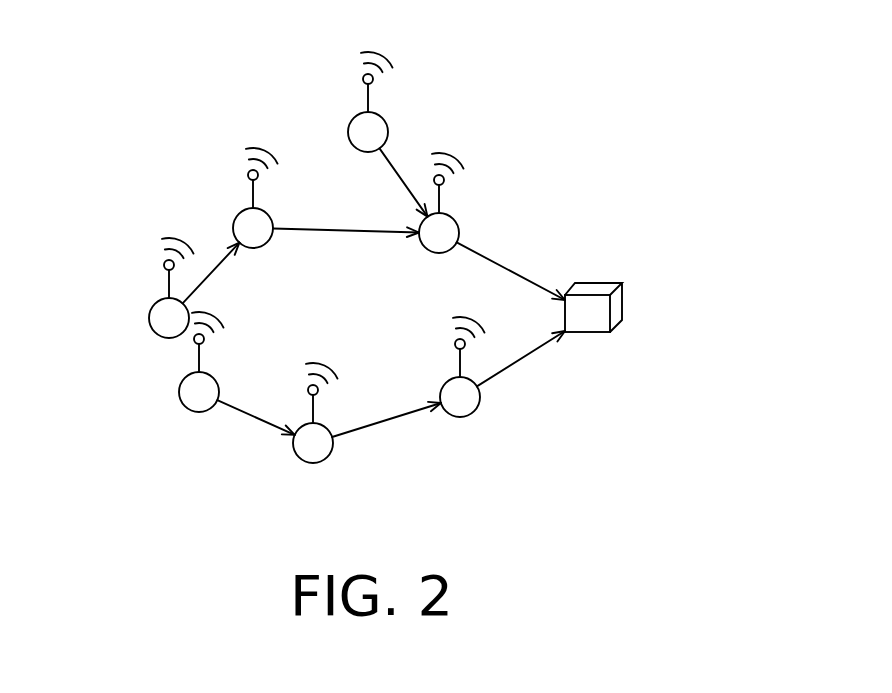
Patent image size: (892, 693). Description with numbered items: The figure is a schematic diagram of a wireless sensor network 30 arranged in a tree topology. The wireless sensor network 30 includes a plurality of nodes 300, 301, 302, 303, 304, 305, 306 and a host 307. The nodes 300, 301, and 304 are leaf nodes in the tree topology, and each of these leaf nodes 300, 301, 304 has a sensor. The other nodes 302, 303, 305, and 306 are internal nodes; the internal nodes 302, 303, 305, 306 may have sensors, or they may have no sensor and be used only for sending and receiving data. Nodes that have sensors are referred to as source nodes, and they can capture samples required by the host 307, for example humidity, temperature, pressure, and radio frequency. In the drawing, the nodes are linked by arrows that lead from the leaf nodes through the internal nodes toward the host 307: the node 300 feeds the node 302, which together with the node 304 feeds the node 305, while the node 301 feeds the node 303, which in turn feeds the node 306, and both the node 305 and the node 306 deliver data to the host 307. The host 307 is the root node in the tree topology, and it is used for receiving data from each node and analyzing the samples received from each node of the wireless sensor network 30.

The wireless sensor network 30 is at (632, 468).
The node 300 is at (148, 289).
The node 301 is at (177, 366).
The node 302 is at (268, 216).
The node 303 is at (294, 424).
The node 304 is at (393, 102).
The node 305 is at (464, 203).
The node 306 is at (461, 384).
The host 307 is at (593, 288).